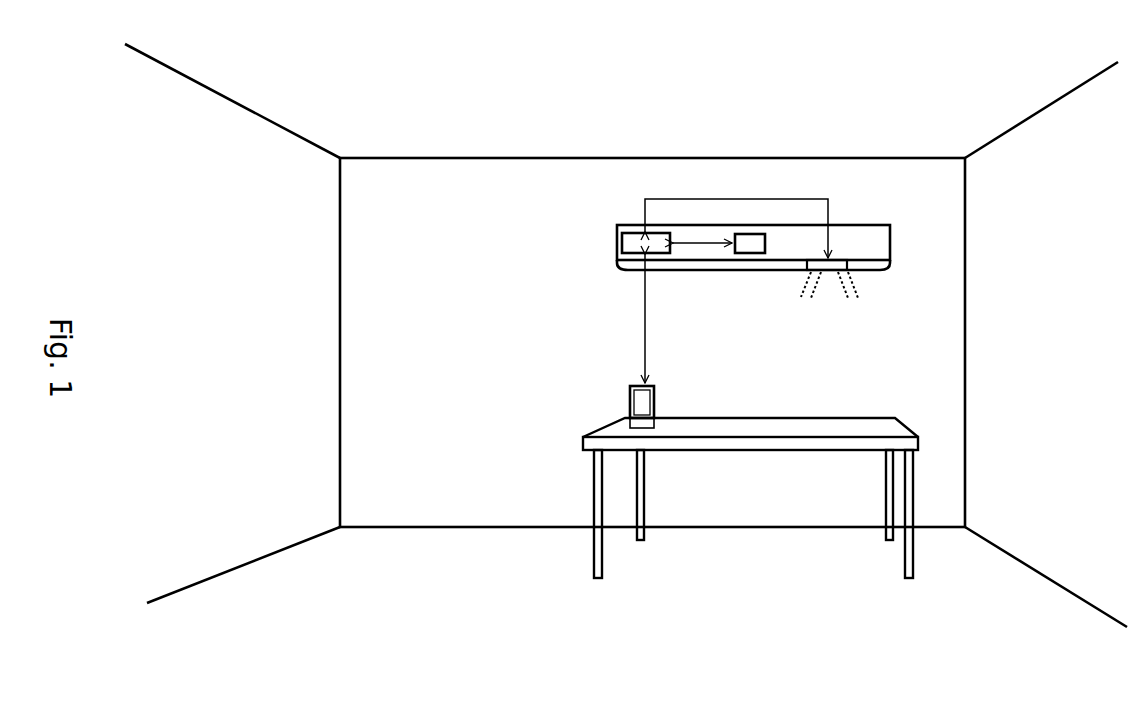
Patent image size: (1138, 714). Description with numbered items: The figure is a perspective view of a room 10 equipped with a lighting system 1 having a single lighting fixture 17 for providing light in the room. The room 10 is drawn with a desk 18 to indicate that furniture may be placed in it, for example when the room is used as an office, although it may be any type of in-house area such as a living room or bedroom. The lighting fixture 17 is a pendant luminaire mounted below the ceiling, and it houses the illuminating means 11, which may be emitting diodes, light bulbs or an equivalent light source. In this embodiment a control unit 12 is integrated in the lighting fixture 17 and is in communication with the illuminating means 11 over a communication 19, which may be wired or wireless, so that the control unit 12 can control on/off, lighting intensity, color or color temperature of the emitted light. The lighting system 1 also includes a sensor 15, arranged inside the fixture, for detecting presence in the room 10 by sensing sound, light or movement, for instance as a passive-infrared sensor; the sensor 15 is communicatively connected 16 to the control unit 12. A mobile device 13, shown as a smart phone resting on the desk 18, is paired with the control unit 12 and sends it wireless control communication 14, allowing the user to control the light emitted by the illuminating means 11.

The lighting system 1 is at (583, 184).
The room 10 is at (362, 160).
The illuminating means 11 is at (830, 273).
The control unit 12 is at (633, 233).
The mobile device 13 is at (640, 425).
The wireless control communication 14 is at (642, 317).
The sensor 15 is at (760, 234).
The communicative connection 16 is at (702, 248).
The lighting fixture 17 is at (875, 238).
The desk 18 is at (897, 440).
The communication 19 is at (697, 199).